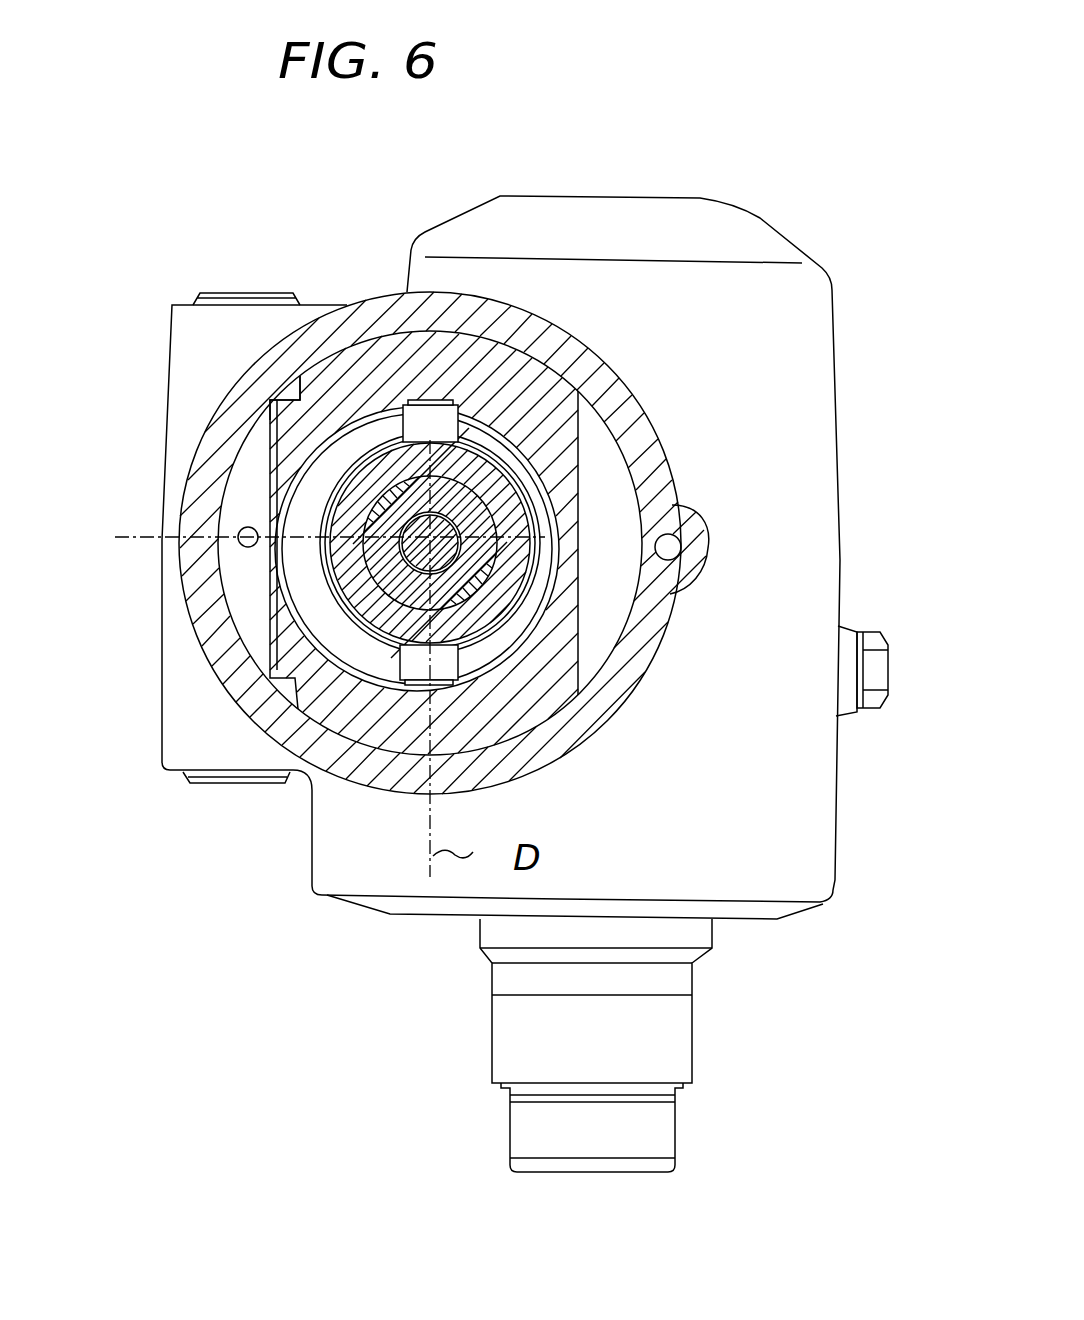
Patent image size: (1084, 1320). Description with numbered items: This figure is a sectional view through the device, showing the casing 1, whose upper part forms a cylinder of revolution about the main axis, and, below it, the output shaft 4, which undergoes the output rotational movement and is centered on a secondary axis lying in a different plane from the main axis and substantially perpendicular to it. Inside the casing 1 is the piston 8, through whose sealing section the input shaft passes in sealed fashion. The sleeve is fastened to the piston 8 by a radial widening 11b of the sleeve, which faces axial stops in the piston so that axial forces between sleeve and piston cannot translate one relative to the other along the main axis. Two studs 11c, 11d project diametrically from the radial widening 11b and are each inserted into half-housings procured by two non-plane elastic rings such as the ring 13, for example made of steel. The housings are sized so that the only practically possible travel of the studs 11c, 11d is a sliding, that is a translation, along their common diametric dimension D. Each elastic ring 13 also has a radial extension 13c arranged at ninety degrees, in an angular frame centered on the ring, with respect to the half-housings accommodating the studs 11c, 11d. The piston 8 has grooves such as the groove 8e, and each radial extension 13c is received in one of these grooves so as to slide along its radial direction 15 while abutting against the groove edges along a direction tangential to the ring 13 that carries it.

The casing 1 is at (840, 787).
The output shaft 4 is at (695, 1055).
The piston 8 is at (551, 690).
The groove 8e is at (307, 465).
The radial widening 11b is at (500, 481).
The stud 11c is at (411, 672).
The stud 11d is at (423, 428).
The elastic ring 13 is at (548, 563).
The radial extension 13c is at (305, 557).
The radial direction 15 is at (122, 530).